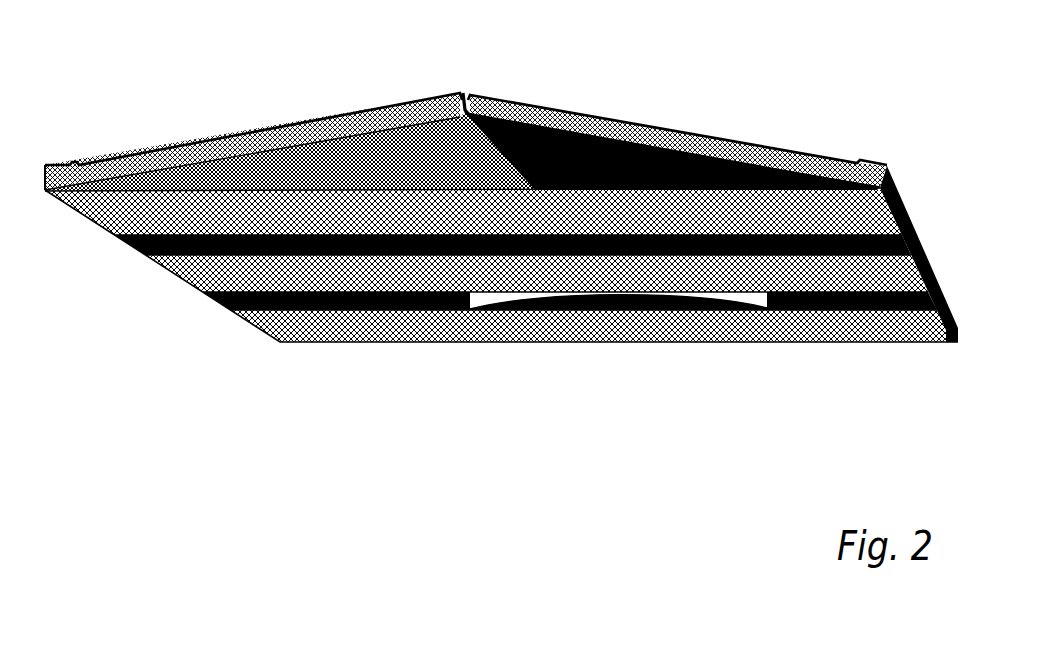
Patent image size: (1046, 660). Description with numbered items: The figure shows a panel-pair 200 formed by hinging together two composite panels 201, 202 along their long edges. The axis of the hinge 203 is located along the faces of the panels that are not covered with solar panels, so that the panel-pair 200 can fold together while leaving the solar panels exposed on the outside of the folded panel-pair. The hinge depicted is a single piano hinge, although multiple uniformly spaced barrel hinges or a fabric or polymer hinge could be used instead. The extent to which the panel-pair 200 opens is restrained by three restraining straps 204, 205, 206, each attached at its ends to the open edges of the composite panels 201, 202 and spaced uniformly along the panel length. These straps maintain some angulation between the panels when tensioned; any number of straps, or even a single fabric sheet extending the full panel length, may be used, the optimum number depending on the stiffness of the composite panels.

The panel-pair 200 is at (501, 208).
The composite panel 201 is at (265, 125).
The composite panel 202 is at (690, 132).
The hinge axis 203 is at (478, 162).
The restraining strap 204 is at (116, 235).
The restraining strap 205 is at (188, 282).
The restraining strap 206 is at (307, 343).